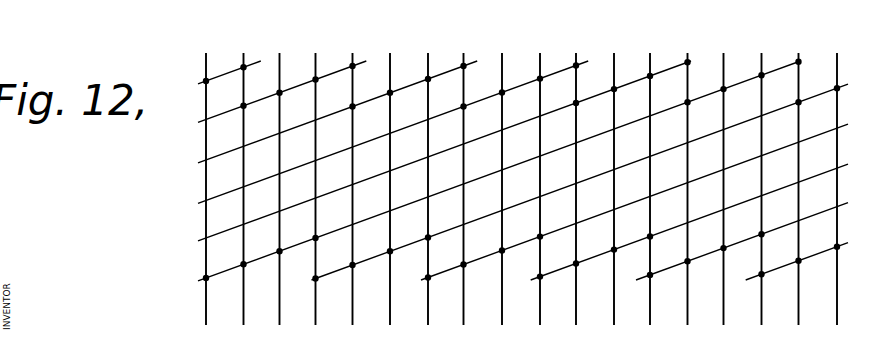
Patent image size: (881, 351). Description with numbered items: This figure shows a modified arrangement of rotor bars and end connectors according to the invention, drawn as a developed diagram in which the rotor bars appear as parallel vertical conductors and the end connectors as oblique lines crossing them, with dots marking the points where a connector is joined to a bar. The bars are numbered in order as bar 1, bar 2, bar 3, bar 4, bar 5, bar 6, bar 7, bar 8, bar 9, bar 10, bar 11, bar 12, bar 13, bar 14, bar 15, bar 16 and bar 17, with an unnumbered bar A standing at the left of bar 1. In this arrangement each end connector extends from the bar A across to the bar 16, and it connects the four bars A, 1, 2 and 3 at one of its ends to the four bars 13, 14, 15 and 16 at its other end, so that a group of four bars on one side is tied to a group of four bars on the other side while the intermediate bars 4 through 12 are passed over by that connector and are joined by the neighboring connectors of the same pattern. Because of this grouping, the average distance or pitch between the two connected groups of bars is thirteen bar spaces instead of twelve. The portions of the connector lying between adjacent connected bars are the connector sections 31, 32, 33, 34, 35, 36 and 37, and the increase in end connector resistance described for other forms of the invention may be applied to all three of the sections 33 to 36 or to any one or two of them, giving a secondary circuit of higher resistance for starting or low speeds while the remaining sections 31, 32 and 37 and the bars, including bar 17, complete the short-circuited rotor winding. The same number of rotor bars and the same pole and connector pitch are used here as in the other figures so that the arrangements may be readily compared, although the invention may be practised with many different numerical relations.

The rotor bar 1 is at (244, 181).
The rotor bar 2 is at (280, 181).
The rotor bar 3 is at (316, 181).
The rotor bar 4 is at (353, 181).
The rotor bar 5 is at (390, 181).
The rotor bar 6 is at (428, 181).
The rotor bar 7 is at (464, 181).
The rotor bar 8 is at (502, 181).
The rotor bar 9 is at (540, 181).
The rotor bar 10 is at (576, 181).
The rotor bar 11 is at (613, 181).
The rotor bar 12 is at (649, 181).
The rotor bar 13 is at (687, 181).
The rotor bar 14 is at (723, 181).
The rotor bar 15 is at (761, 181).
The rotor bar 16 is at (799, 181).
The rotor bar 17 is at (837, 181).
The connector section 31 is at (215, 284).
The connector section 32 is at (324, 245).
The connector section 33 is at (324, 285).
The connector section 34 is at (362, 270).
The connector section 35 is at (399, 256).
The connector section 36 is at (437, 243).
The connector section 37 is at (437, 282).